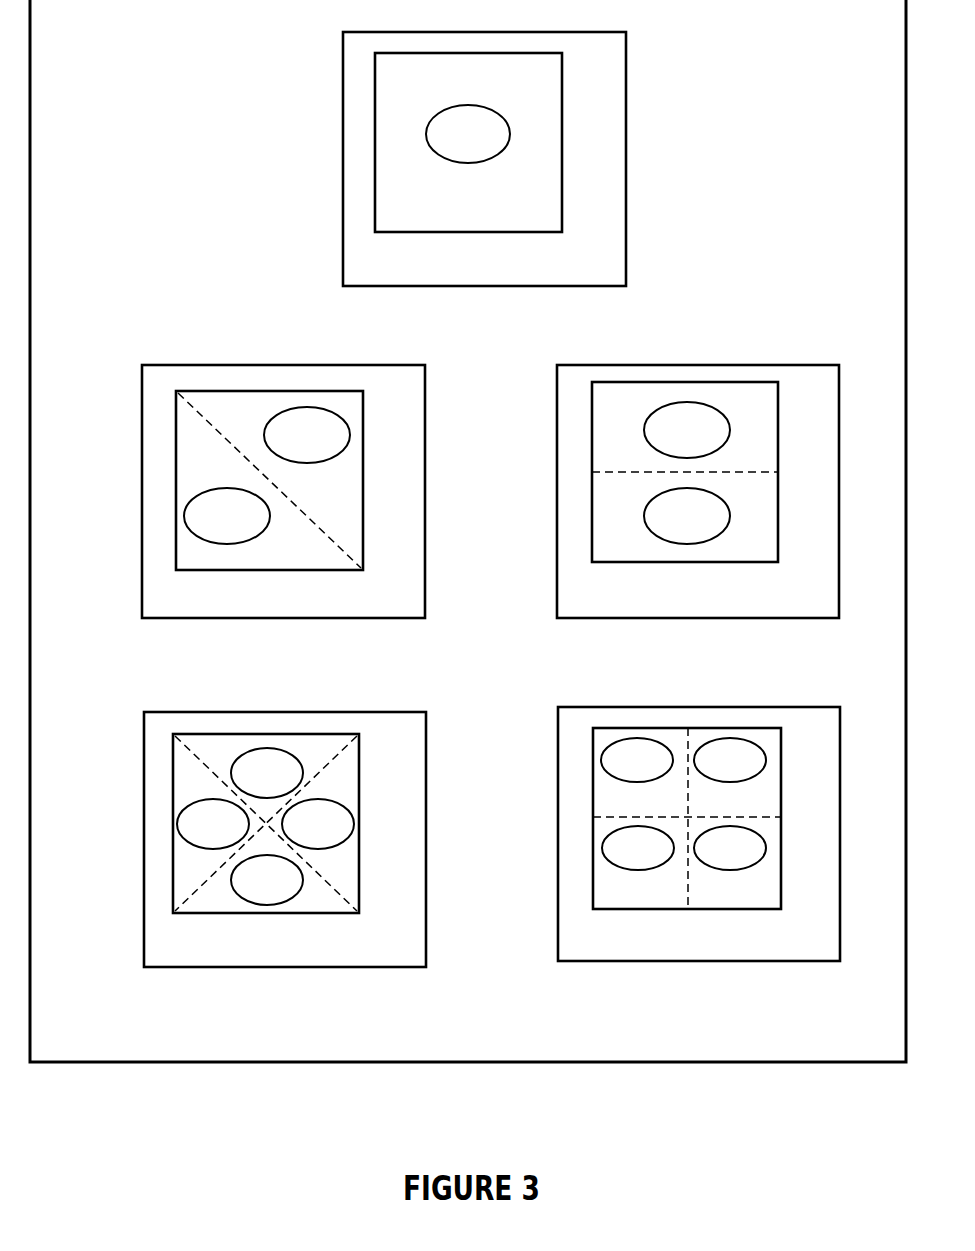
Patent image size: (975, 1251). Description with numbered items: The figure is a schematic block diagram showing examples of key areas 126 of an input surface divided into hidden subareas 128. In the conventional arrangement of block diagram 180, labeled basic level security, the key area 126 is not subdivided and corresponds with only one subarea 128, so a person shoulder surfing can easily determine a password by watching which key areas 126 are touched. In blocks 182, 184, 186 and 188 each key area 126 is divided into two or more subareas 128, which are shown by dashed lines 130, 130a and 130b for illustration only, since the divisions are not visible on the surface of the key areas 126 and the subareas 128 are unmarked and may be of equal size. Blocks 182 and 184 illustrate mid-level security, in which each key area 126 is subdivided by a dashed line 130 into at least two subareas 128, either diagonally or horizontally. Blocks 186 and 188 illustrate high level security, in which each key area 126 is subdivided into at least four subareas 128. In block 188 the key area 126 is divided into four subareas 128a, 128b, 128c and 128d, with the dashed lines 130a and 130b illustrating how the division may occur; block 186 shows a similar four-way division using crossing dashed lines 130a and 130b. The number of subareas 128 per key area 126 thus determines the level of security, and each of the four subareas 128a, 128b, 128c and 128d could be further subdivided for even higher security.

The key area 126 is at (576, 142).
The subarea 128 is at (393, 168).
The first subarea 128a is at (346, 501).
The second subarea 128b is at (309, 562).
The third subarea 128c is at (758, 904).
The fourth subarea 128d is at (668, 904).
The dashed line 130 is at (208, 434).
The first dashed line 130a is at (325, 777).
The second dashed line 130b is at (201, 777).
The basic level security block diagram 180 is at (615, 272).
The mid-level security block 182 is at (406, 604).
The mid-level security block 184 is at (821, 602).
The high level security block 186 is at (411, 951).
The high level security block 188 is at (826, 949).